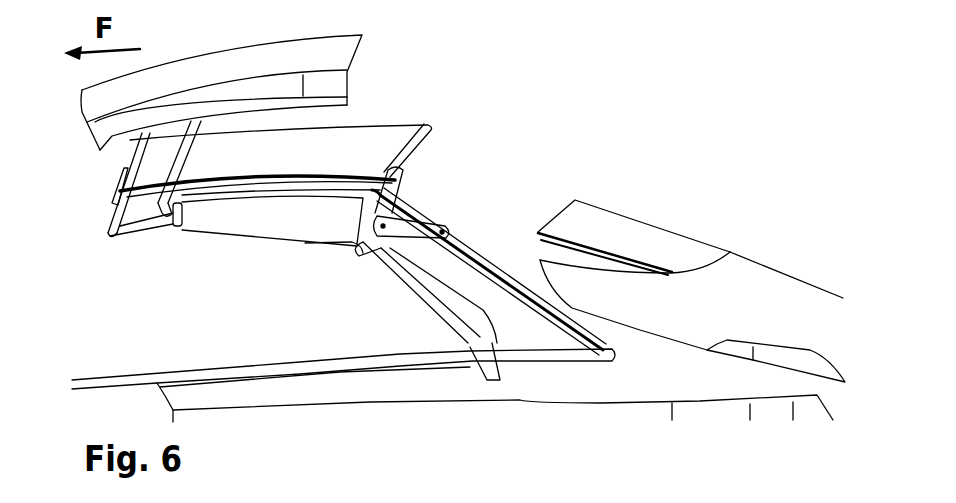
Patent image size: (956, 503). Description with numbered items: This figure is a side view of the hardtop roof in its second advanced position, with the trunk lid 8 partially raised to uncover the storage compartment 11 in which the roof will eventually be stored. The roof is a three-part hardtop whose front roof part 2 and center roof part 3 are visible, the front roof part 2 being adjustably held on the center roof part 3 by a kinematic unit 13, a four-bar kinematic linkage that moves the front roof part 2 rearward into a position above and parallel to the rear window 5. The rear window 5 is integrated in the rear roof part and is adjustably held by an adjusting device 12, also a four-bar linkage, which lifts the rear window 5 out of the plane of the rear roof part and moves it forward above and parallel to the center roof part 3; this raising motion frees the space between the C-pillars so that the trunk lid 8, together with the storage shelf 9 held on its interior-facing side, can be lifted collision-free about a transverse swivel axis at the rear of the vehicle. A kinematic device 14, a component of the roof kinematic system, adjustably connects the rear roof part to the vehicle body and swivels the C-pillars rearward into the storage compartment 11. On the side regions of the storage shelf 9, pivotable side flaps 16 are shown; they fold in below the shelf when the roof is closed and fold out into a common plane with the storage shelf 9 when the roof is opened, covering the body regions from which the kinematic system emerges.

The front roof part 2 is at (348, 53).
The center roof part 3 is at (260, 219).
The rear window 5 is at (397, 132).
The trunk lid 8 is at (757, 268).
The storage shelf 9 is at (635, 228).
The storage compartment 11 is at (707, 420).
The adjusting device 12 is at (420, 200).
The kinematic unit 13 is at (106, 203).
The kinematic device 14 is at (382, 284).
The side flaps 16 is at (540, 250).